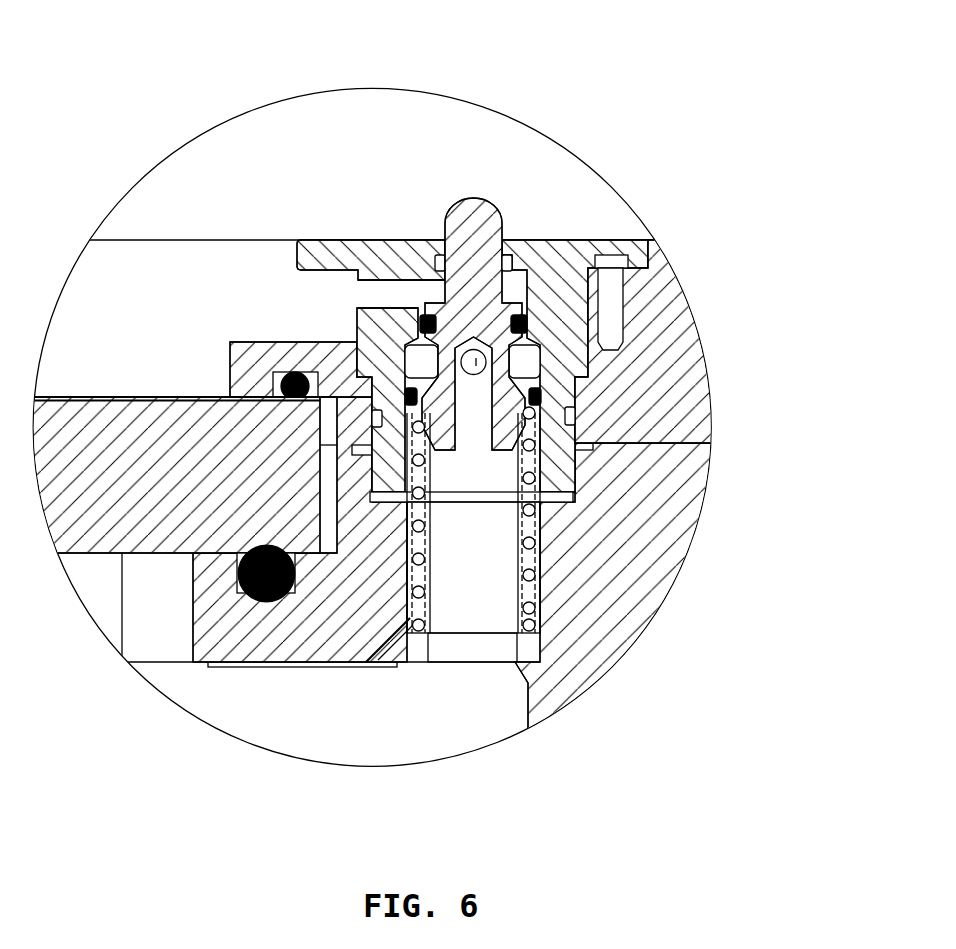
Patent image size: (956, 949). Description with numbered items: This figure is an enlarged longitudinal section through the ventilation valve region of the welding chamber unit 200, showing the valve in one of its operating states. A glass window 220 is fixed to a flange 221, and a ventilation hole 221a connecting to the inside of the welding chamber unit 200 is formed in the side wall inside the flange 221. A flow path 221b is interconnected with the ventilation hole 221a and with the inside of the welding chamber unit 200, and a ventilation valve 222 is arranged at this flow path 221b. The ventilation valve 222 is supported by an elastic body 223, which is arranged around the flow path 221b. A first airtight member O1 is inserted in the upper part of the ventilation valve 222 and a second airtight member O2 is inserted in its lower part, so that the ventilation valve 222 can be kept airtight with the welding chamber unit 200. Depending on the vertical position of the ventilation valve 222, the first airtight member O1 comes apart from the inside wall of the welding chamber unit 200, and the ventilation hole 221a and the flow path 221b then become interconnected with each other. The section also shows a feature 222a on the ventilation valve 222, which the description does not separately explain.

The welding chamber unit 200 is at (612, 613).
The glass window 220 is at (110, 400).
The flange 221 is at (385, 250).
The ventilation hole 221a is at (396, 305).
The flow path 221b is at (485, 520).
The ventilation valve 222 is at (478, 200).
The hole 222a is at (476, 362).
The elastic body 223 is at (528, 547).
The first airtight member O1 is at (524, 322).
The second airtight member O2 is at (541, 397).